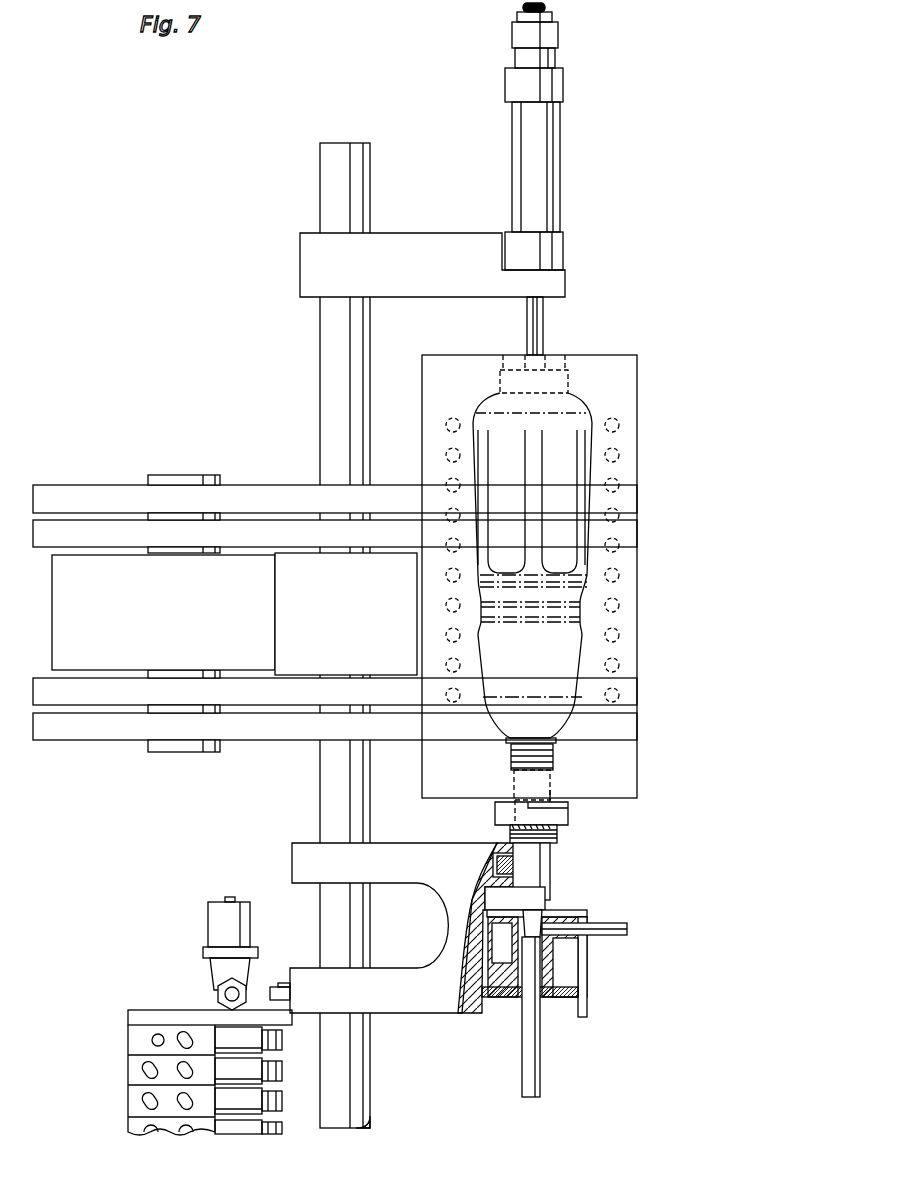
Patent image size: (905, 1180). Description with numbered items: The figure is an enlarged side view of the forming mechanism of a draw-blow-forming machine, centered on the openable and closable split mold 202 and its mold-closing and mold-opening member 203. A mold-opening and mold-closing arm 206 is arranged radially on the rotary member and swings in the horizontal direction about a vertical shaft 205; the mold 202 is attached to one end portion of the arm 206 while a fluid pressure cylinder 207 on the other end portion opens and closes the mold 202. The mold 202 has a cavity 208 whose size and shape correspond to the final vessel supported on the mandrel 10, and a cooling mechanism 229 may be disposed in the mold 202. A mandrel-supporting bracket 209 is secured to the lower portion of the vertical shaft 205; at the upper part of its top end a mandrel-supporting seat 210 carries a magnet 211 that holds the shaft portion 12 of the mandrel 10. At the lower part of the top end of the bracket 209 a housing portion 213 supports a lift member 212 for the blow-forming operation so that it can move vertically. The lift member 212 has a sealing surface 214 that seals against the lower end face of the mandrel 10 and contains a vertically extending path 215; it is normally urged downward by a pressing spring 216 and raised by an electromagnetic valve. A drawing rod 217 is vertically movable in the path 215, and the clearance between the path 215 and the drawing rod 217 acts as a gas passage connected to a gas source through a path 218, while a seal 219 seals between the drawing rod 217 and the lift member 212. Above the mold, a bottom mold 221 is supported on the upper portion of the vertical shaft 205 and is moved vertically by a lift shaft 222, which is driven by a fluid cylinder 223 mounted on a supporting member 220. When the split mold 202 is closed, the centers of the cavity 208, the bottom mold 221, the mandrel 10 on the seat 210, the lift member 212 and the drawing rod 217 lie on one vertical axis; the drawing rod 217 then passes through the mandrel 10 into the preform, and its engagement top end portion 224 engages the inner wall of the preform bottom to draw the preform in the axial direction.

The mandrel 10 is at (548, 804).
The shaft portion 12 is at (550, 860).
The split mold 202 is at (635, 448).
The mold-closing and mold-opening member 203 is at (103, 470).
The vertical shaft 205 is at (320, 366).
The mold-opening and mold-closing arm 206 is at (272, 490).
The fluid pressure cylinder 207 is at (210, 630).
The cavity 208 is at (586, 425).
The mandrel-supporting bracket 209 is at (415, 862).
The mandrel-supporting seat 210 is at (505, 888).
The magnet 211 is at (520, 860).
The lift member for the blow-forming operation 212 is at (572, 980).
The housing portion 213 is at (568, 952).
The sealing surface 214 is at (543, 908).
The path 215 is at (580, 915).
The pressing spring 216 is at (493, 935).
The drawing rod 217 is at (540, 1050).
The path 218 is at (612, 932).
The seal 219 is at (495, 1000).
The supporting member 220 is at (430, 242).
The bottom mold 221 is at (557, 372).
The lift shaft 222 is at (527, 327).
The fluid cylinder 223 is at (563, 170).
The engagement top end portion 224 is at (497, 918).
The cooling mechanism 229 is at (620, 572).